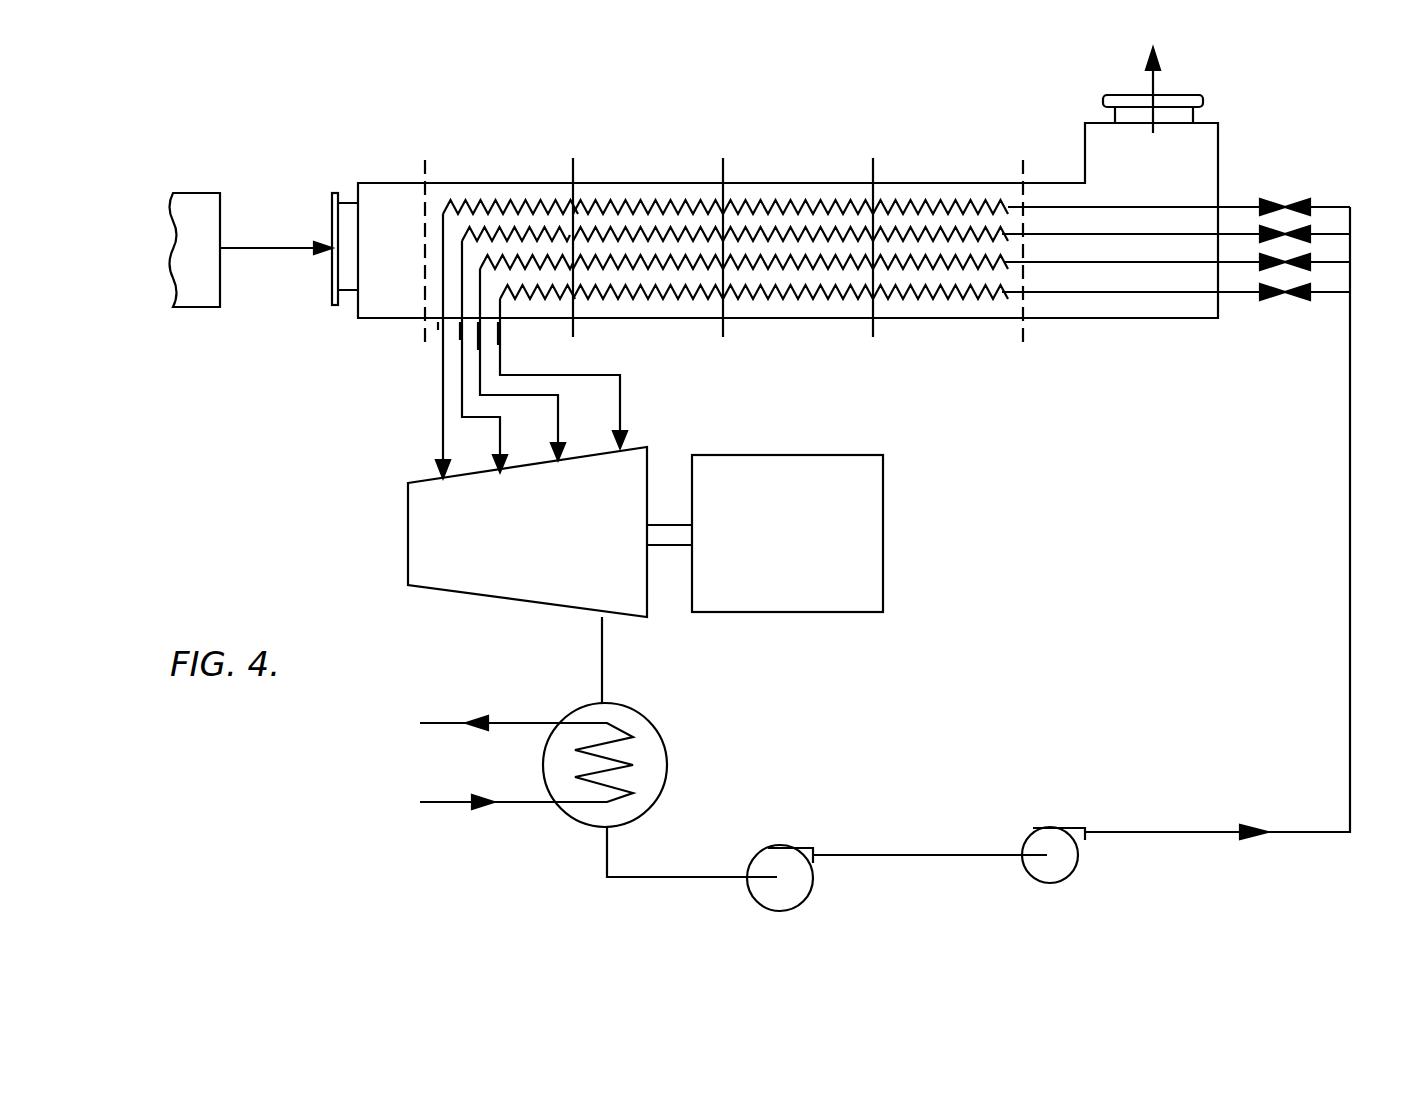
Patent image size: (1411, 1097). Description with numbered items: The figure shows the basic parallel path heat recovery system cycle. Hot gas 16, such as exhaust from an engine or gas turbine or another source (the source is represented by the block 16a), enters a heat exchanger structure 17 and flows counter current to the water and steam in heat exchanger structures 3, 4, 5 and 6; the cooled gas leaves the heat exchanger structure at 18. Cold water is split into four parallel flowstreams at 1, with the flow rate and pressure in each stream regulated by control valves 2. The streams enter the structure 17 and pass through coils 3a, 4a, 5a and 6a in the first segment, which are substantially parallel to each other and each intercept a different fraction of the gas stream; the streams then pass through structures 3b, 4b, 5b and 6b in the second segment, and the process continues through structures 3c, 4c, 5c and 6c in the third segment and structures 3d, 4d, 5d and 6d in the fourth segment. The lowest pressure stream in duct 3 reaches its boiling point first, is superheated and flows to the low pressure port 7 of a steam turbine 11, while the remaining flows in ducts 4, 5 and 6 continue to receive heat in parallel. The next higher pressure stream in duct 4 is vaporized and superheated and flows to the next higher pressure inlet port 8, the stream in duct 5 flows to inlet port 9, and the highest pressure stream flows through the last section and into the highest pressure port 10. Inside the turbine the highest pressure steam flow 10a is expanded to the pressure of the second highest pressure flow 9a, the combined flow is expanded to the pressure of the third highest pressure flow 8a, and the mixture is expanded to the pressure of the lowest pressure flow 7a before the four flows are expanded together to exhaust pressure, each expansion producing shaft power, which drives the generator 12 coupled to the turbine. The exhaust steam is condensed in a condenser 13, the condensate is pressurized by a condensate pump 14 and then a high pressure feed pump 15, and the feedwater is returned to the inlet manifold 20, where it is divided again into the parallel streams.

The split point 1 is at (1332, 200).
The control valves 2 is at (1283, 312).
The duct 3 is at (925, 256).
The coil 3a is at (1005, 307).
The structure 3b is at (852, 293).
The structure 3c is at (713, 300).
The structure 3d is at (543, 287).
The duct 4 is at (915, 244).
The coil 4a is at (973, 280).
The structure 4b is at (787, 267).
The structure 4c is at (653, 260).
The structure 4d is at (517, 257).
The duct 5 is at (906, 243).
The coil 5a is at (940, 237).
The structure 5b is at (822, 227).
The structure 5c is at (660, 230).
The structure 5d is at (493, 227).
The duct 6 is at (876, 239).
The coil 6a is at (900, 220).
The structure 6b is at (774, 206).
The structure 6c is at (600, 207).
The structure 6d is at (460, 205).
The low pressure port 7 is at (620, 415).
The lowest pressure flow 7a is at (503, 340).
The next higher pressure inlet port 8 is at (560, 423).
The third highest pressure flow 8a is at (477, 353).
The next higher inlet pressure port 9 is at (503, 438).
The second highest pressure flow 9a is at (460, 337).
The highest pressure port 10 is at (443, 428).
The highest pressure steam flow 10a is at (437, 326).
The steam turbine 11 is at (527, 532).
The generator 12 is at (765, 533).
The condenser 13 is at (653, 753).
The condensate pump 14 is at (785, 860).
The high pressure feed pump 15 is at (1052, 837).
The hot gas 16 is at (270, 253).
The heat source 16a is at (192, 193).
The heat exchanger structure 17 is at (383, 170).
The gas exit 18 is at (1153, 83).
The inlet manifold 20 is at (1350, 243).